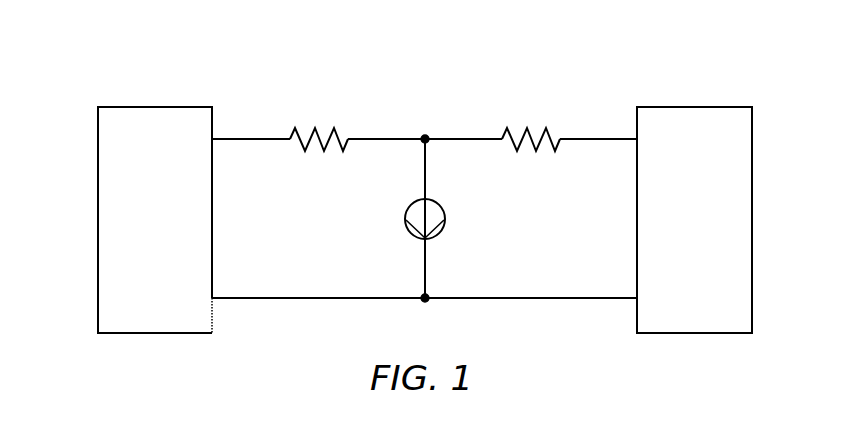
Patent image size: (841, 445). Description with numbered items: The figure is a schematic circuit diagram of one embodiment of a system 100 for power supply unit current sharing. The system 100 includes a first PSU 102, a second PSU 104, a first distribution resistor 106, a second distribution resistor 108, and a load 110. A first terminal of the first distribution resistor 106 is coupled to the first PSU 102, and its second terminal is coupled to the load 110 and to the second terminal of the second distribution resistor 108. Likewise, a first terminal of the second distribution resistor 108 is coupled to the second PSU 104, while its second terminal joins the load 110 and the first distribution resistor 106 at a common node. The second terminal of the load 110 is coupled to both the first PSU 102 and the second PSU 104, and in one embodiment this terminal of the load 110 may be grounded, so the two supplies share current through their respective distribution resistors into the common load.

The system 100 is at (90, 90).
The first PSU 102 is at (155, 220).
The second PSU 104 is at (694, 220).
The first distribution resistor 106 is at (294, 129).
The second distribution resistor 108 is at (506, 129).
The load 110 is at (405, 213).